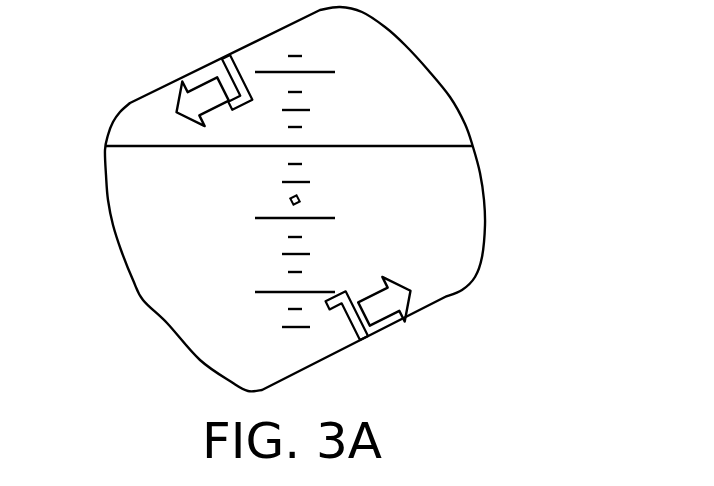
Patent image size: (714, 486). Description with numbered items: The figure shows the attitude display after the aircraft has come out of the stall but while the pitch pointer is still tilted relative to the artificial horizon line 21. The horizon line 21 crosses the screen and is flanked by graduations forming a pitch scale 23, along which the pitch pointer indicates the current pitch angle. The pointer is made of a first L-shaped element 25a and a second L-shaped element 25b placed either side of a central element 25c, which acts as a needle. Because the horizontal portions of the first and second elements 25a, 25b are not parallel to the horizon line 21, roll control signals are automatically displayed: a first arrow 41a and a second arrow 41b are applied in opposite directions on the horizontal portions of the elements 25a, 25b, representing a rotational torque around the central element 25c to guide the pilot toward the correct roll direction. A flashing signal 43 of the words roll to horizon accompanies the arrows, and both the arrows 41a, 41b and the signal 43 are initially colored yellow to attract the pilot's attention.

The artificial horizon line 21 is at (128, 146).
The pitch scale 23 is at (326, 177).
The first L-shaped element 25a is at (233, 56).
The second L-shaped element 25b is at (384, 328).
The central element 25c is at (301, 203).
The first arrow 41a is at (198, 71).
The second arrow 41b is at (410, 302).
The flashing signal 43 is at (456, 243).